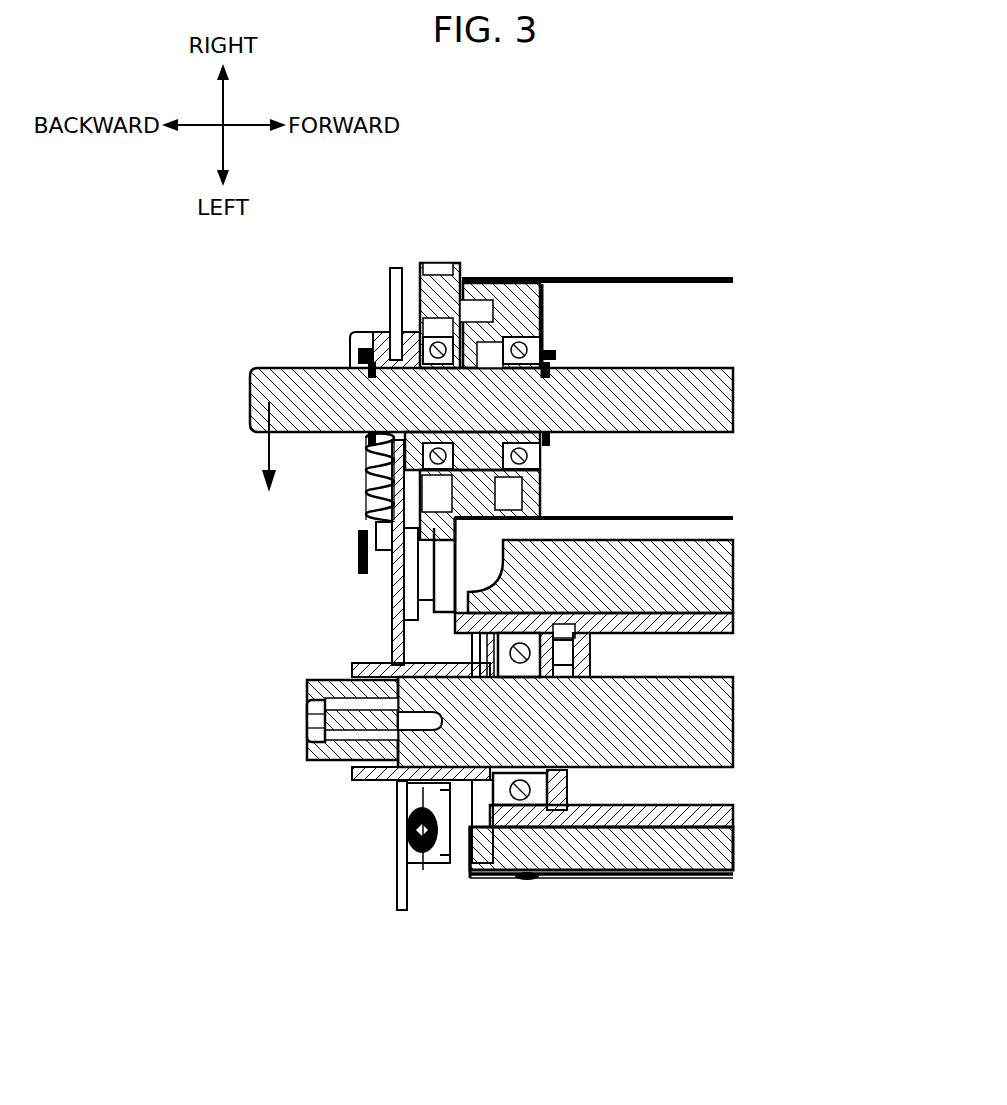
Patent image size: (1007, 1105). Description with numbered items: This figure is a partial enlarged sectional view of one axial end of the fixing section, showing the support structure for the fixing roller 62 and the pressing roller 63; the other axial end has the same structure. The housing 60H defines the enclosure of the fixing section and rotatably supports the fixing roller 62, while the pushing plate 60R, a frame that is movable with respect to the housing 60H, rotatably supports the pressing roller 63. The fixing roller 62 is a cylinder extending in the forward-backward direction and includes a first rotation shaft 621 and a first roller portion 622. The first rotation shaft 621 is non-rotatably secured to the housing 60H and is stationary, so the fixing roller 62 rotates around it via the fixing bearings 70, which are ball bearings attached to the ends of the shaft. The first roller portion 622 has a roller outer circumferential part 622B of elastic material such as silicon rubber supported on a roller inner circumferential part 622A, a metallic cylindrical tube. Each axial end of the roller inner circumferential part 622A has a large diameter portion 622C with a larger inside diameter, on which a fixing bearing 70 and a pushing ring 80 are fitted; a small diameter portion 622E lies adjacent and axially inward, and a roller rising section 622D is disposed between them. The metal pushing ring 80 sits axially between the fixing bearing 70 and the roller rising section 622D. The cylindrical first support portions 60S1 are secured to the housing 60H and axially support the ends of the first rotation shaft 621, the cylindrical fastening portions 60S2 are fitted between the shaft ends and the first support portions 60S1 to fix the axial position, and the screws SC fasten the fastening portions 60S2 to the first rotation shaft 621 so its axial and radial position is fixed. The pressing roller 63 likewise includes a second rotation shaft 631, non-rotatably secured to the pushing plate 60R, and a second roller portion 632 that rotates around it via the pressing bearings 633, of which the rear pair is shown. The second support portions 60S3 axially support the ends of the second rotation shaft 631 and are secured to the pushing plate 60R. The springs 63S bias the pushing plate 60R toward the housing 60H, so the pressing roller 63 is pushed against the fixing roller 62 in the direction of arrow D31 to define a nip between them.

The pressing roller 63 is at (676, 243).
The second rotation shaft 631 is at (302, 383).
The second roller portion 632 is at (597, 276).
The pressing bearings 633 is at (520, 345).
The springs 63S is at (365, 476).
The pushing plate 60R is at (385, 586).
The first support portions 60S1 is at (371, 781).
The fastening portions 60S2 is at (336, 766).
The second support portions 60S3 is at (385, 340).
The housing 60H is at (402, 912).
The first rotation shaft 621 is at (700, 676).
The fixing roller 62 is at (687, 897).
The first roller portion 622 is at (709, 1012).
The roller inner circumferential part 622A is at (657, 815).
The roller outer circumferential part 622B is at (632, 846).
The large diameter portion 622C is at (495, 865).
The roller rising section 622D is at (565, 806).
The small diameter portion 622E is at (697, 800).
The fixing bearings 70 is at (470, 863).
The pushing ring 80 is at (533, 880).
The screws SC is at (305, 722).
The arrow D31 is at (267, 450).